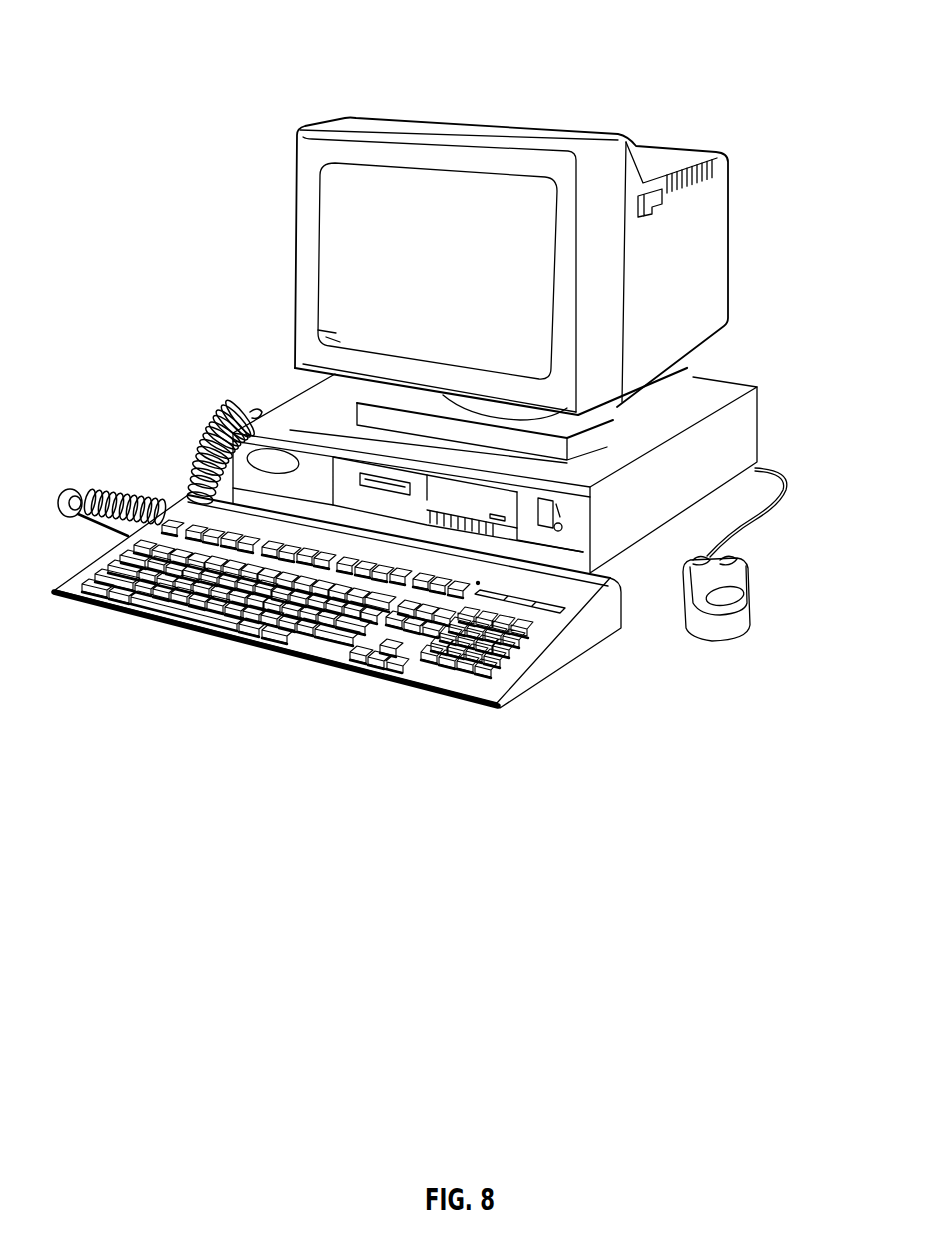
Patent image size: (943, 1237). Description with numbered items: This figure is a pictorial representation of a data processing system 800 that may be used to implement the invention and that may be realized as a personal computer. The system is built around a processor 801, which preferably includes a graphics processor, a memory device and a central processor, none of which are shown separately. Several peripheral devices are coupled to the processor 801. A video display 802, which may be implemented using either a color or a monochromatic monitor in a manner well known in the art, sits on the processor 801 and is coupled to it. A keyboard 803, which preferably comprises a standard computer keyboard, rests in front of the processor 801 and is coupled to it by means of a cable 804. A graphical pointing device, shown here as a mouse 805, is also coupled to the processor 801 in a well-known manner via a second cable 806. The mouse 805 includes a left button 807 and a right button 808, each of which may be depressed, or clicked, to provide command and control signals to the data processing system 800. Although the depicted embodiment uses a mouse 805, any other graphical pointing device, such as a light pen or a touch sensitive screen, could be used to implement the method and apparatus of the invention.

The data processing system 800 is at (613, 95).
The processor 801 is at (747, 418).
The video display 802 is at (290, 252).
The keyboard 803 is at (335, 670).
The cable 804 is at (195, 433).
The mouse 805 is at (731, 619).
The cable 806 is at (763, 513).
The left button 807 is at (686, 569).
The right button 808 is at (732, 565).